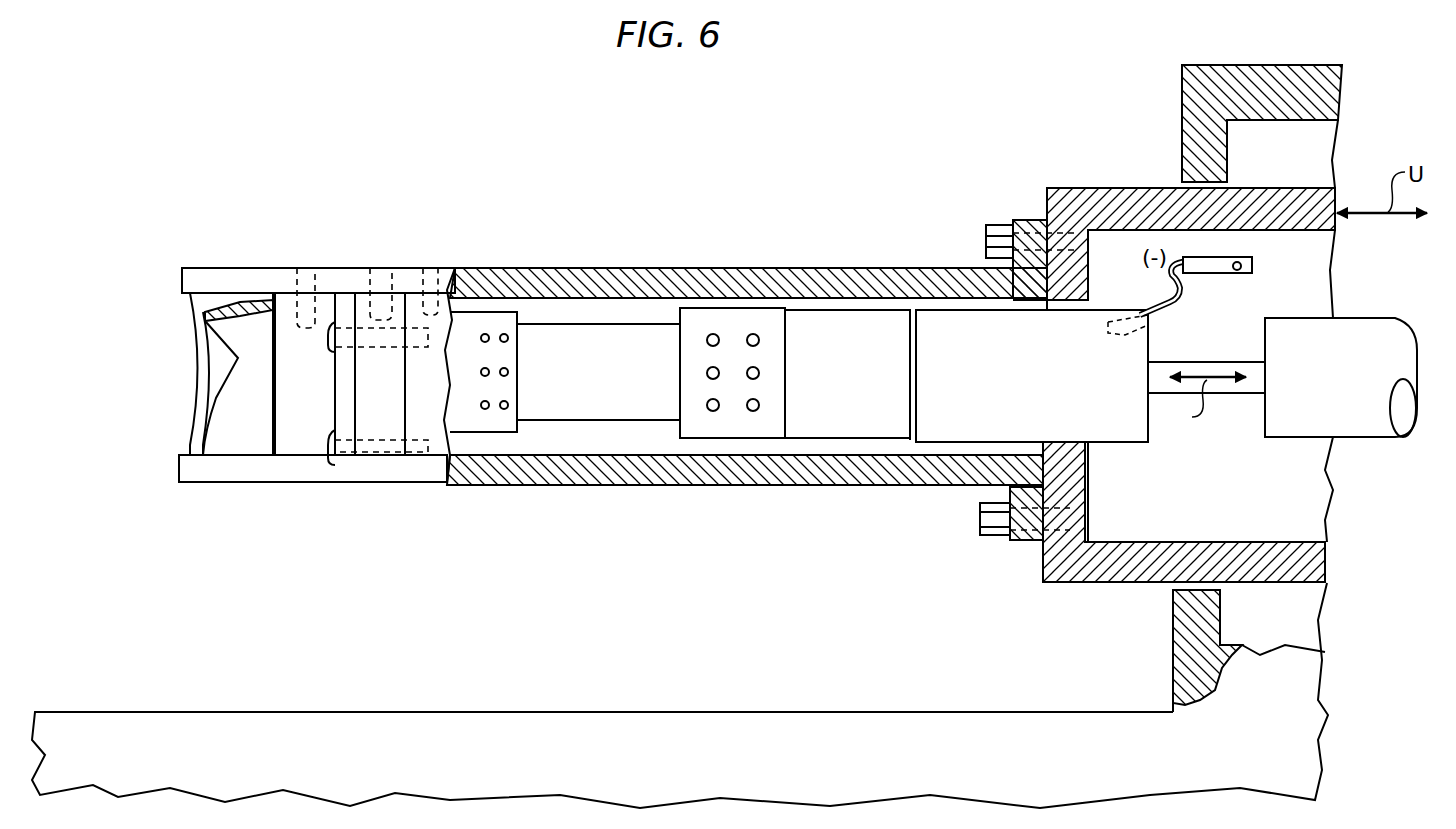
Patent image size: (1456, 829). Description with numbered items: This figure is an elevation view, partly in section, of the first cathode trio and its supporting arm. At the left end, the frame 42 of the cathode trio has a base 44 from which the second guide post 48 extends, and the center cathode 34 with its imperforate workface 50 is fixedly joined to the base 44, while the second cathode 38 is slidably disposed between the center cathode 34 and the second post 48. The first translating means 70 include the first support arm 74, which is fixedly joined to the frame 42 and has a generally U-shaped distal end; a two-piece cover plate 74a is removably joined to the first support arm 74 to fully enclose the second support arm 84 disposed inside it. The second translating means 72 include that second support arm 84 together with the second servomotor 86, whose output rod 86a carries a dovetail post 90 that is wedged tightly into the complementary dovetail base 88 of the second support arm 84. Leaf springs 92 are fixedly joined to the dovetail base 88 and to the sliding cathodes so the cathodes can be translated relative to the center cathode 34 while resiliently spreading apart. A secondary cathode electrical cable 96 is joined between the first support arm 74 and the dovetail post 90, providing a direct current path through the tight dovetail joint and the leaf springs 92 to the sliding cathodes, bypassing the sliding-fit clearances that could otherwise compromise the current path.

The center cathode 34 is at (183, 433).
The second cathode 38 is at (239, 374).
The frame 42 is at (340, 490).
The base 44 is at (205, 482).
The second guide post 48 is at (293, 440).
The workface 50 is at (200, 378).
The first translating means 70 is at (966, 219).
The second translating means 72 is at (1133, 460).
The first support arm 74 is at (1040, 565).
The cover plate 74a is at (460, 268).
The second support arm 84 is at (903, 453).
The second servomotor 86 is at (1380, 438).
The output rod 86a is at (1230, 394).
The dovetail base 88 is at (795, 373).
The dovetail post 90 is at (1032, 376).
The leaf springs 92 is at (565, 372).
The secondary cathode electrical cable 96 is at (1187, 302).